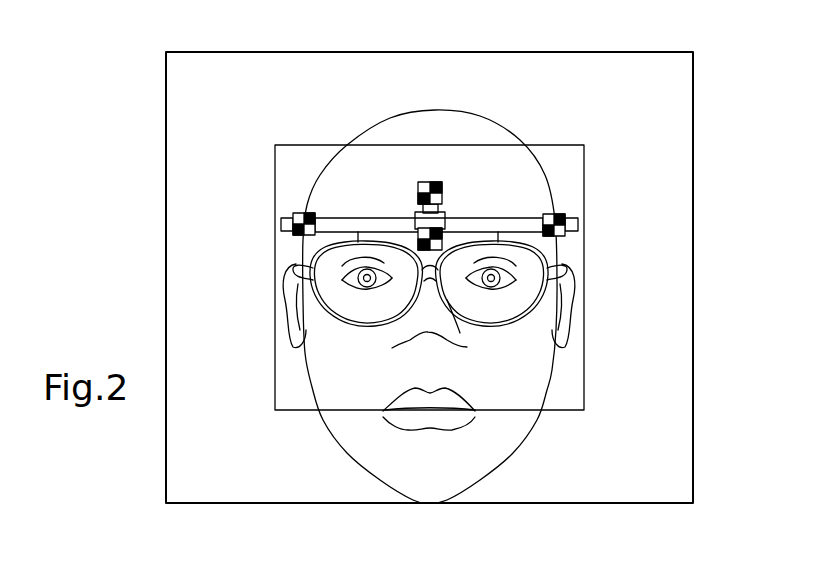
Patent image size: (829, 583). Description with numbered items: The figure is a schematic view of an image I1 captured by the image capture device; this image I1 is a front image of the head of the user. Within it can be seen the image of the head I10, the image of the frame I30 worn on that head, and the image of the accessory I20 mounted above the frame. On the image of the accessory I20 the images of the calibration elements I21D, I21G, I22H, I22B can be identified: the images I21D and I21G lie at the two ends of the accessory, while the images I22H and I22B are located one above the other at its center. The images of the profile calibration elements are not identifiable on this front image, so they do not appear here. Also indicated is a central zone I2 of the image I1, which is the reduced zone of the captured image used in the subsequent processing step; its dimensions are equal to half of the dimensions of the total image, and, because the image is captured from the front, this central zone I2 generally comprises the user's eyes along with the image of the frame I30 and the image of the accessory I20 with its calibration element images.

The image I1 is at (680, 464).
The central zone I2 is at (585, 171).
The image of the head I10 is at (471, 115).
The image of the accessory I20 is at (572, 232).
The image of calibration element I21D is at (300, 214).
The image of calibration element I21G is at (558, 214).
The image of calibration element I22H is at (423, 181).
The image of calibration element I22B is at (445, 242).
The image of the frame I30 is at (500, 322).